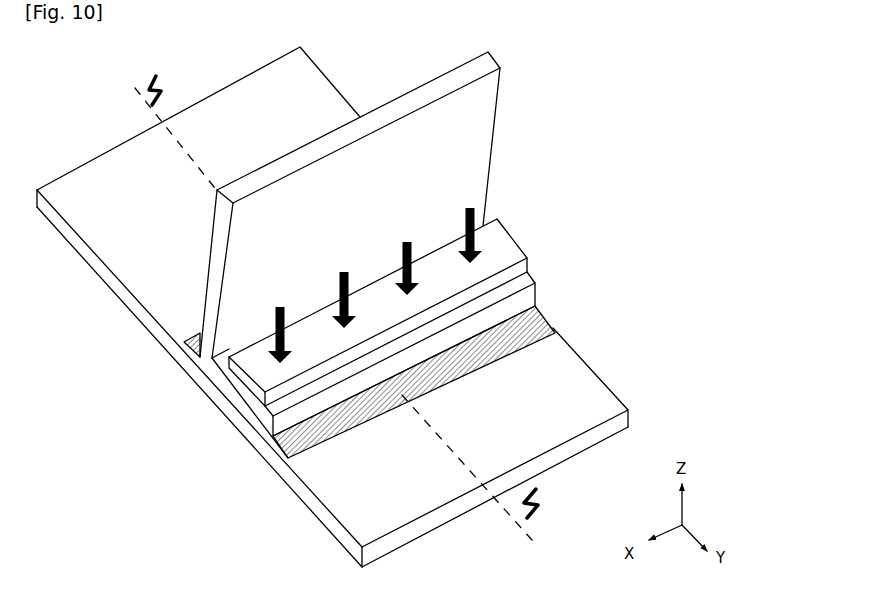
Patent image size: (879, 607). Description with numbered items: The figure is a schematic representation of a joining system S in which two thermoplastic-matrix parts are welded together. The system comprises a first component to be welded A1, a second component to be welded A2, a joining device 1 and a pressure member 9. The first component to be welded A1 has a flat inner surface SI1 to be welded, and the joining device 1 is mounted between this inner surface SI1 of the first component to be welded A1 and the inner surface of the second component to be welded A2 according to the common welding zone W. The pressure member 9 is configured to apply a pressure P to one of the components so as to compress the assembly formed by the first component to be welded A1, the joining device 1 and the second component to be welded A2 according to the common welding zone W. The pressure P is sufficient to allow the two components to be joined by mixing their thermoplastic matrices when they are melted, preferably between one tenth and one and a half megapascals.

The joining system S is at (590, 101).
The first component to be welded A1 is at (92, 260).
The second component to be welded A2 is at (200, 388).
The common welding zone W is at (226, 410).
The joining device 1 is at (268, 453).
The pressure member 9 is at (511, 246).
The pressure P is at (375, 285).
The inner surface SI1 is at (576, 371).